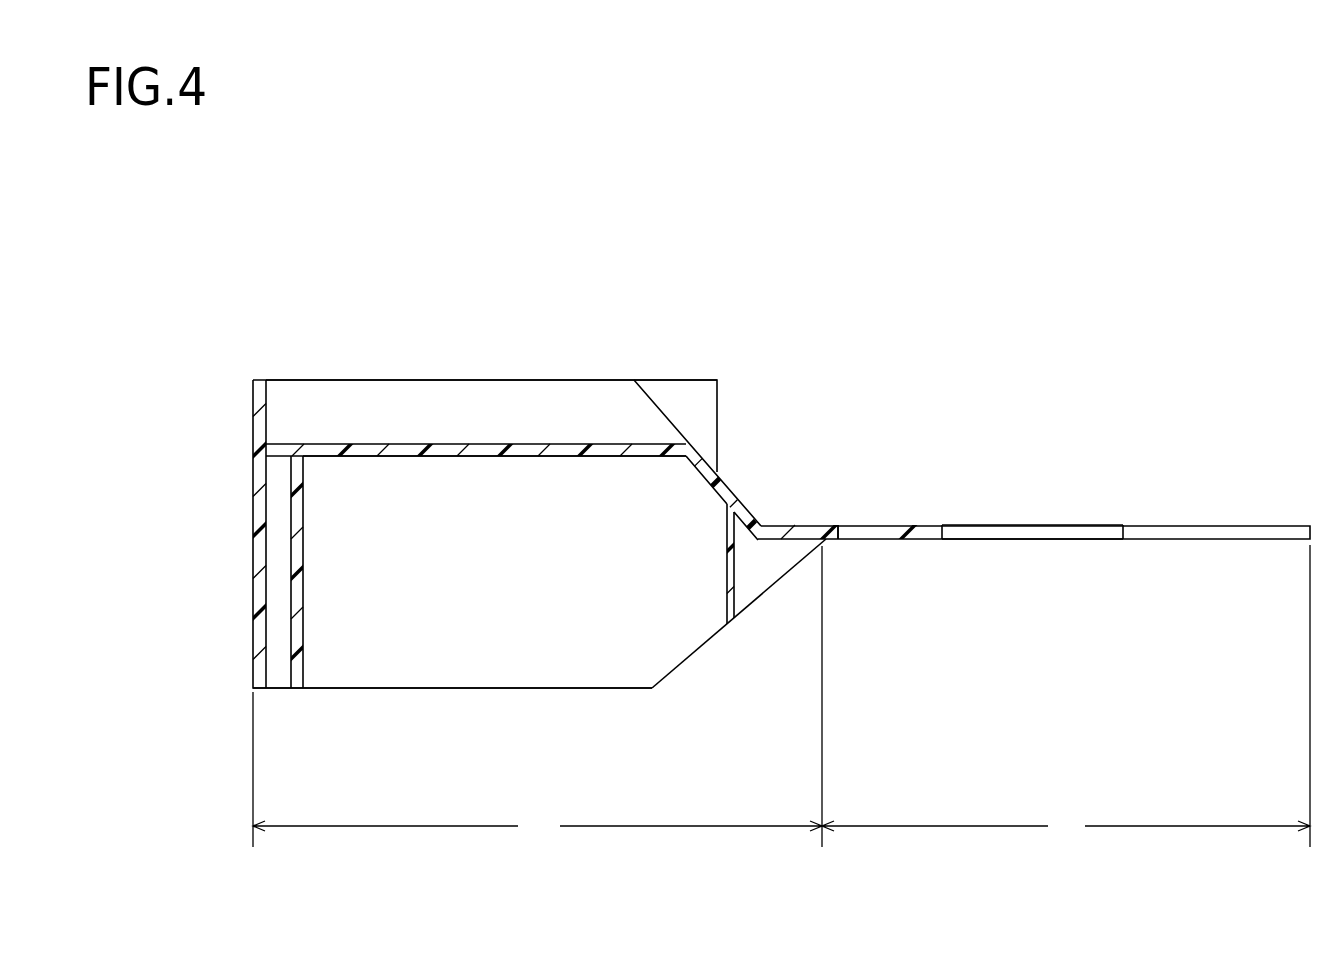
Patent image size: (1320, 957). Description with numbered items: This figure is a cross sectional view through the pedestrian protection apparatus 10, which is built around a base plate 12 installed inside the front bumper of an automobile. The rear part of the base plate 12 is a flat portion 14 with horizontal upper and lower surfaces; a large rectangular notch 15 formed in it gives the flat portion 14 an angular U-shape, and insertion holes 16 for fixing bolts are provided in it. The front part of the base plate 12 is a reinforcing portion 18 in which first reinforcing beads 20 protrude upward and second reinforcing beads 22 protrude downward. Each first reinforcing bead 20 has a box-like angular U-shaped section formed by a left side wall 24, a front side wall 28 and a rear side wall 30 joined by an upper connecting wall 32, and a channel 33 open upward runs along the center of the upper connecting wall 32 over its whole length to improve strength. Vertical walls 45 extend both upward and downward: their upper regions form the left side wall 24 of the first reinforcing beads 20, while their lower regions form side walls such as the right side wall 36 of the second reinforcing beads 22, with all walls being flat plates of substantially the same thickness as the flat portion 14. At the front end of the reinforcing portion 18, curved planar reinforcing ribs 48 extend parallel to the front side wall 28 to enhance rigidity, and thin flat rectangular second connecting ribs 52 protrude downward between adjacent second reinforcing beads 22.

The pedestrian protection apparatus 10 is at (882, 392).
The base plate 12 is at (1190, 512).
The flat portion 14 is at (1066, 696).
The rectangular notch 15 is at (1052, 532).
The insertion holes 16 is at (846, 537).
The reinforcing portion 18 is at (537, 696).
The first reinforcing beads 20 is at (414, 368).
The second reinforcing beads 22 is at (538, 703).
The left side wall 24 is at (568, 496).
The front side wall 28 is at (258, 553).
The rear side wall 30 is at (716, 470).
The upper connecting wall 32 is at (481, 445).
The channel 33 is at (362, 444).
The right side wall of second reinforcing bead 36 is at (572, 640).
The vertical walls 45 is at (648, 286).
The reinforcing ribs 48 is at (297, 597).
The second connecting ribs 52 is at (727, 575).